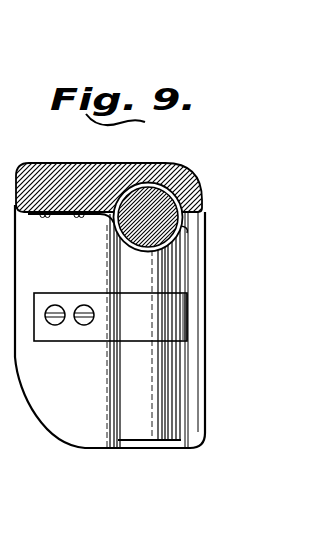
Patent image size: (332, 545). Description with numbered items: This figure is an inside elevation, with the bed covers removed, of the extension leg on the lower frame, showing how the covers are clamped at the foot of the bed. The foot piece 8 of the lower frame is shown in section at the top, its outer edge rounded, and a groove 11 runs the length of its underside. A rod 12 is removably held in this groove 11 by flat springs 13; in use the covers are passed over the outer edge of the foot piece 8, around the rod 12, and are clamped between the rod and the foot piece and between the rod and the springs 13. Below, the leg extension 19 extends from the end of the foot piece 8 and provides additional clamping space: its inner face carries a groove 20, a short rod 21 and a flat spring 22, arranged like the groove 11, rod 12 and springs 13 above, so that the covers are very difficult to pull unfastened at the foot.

The foot piece 8 is at (41, 170).
The groove 11 is at (193, 188).
The rod 12 is at (176, 220).
The flat springs 13 is at (102, 222).
The leg extension 19 is at (80, 388).
The groove 20 is at (182, 275).
The short rod 21 is at (132, 400).
The flat spring 22 is at (47, 333).